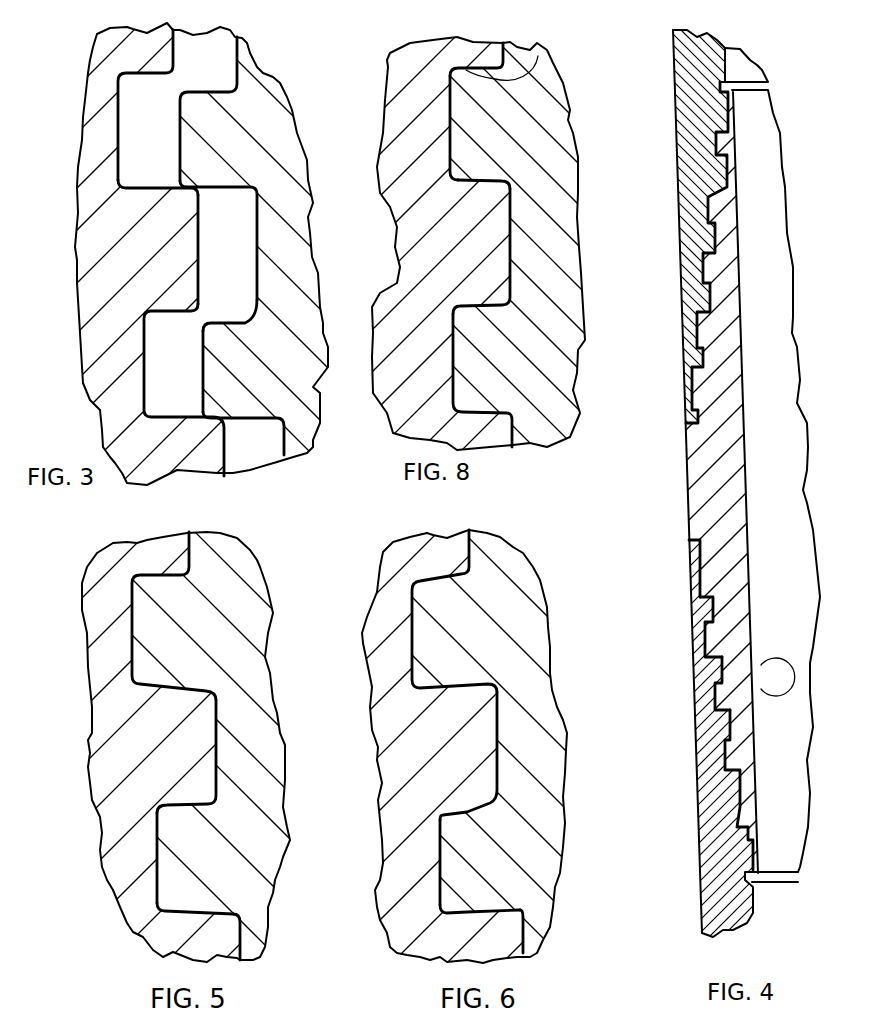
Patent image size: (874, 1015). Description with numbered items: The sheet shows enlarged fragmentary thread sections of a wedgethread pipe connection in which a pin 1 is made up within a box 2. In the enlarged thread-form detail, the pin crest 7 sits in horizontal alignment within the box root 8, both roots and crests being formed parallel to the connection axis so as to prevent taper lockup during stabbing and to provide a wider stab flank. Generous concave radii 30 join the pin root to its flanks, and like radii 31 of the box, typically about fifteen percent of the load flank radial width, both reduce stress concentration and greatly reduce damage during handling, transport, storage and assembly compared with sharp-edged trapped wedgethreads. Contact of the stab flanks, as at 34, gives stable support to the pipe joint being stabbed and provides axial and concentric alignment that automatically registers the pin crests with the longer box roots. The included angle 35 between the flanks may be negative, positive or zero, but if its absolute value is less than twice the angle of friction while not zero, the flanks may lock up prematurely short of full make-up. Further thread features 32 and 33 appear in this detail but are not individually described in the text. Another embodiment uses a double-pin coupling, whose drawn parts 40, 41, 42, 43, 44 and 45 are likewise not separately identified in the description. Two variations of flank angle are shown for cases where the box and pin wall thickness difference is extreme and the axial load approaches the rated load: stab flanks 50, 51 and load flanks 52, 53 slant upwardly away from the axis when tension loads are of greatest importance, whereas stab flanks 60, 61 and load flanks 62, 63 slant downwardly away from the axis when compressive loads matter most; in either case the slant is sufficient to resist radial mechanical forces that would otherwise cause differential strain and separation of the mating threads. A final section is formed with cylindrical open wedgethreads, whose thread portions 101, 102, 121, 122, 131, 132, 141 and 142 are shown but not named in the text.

In FIG. 5, the pin 1 is at (259, 565).
In FIG. 6, the pin 1 is at (503, 535).
In FIG. 5, the box 2 is at (92, 725).
In FIG. 6, the box 2 is at (363, 668).
In FIG. 3, the pin crest 7 is at (178, 133).
In FIG. 3, the box root 8 is at (118, 101).
In FIG. 3, the concave radii 30 is at (255, 320).
In FIG. 3, the box radii 31 is at (146, 416).
In FIG. 3, the upper rounded edge of second panel 32 is at (186, 88).
In FIG. 3, the tongue of first panel 33 is at (198, 305).
In FIG. 3, the stab flank contact 34 is at (182, 183).
In FIG. 3, the included angle 35 is at (240, 189).
In FIG. 4, the board 40 is at (685, 500).
In FIG. 4, the lower panel section 41 is at (697, 750).
In FIG. 4, the upper panel section 42 is at (678, 147).
In FIG. 4, the locking projection 43 is at (761, 689).
In FIG. 4, the bottom edge strip 44 is at (755, 898).
In FIG. 4, the joint between sections 45 is at (723, 541).
In FIG. 5, the stab flank 50 is at (205, 910).
In FIG. 5, the stab flank 51 is at (183, 910).
In FIG. 5, the load flank 52 is at (163, 806).
In FIG. 5, the load flank 53 is at (193, 807).
In FIG. 6, the stab flank 60 is at (483, 922).
In FIG. 6, the stab flank 61 is at (468, 918).
In FIG. 6, the load flank 62 is at (447, 813).
In FIG. 6, the load flank 63 is at (440, 843).
In FIG. 8, the second panel 101 is at (578, 410).
In FIG. 8, the first panel 102 is at (391, 60).
In FIG. 8, the upper tongue of first panel 121 is at (450, 124).
In FIG. 8, the lower tongue of first panel 122 is at (458, 350).
In FIG. 8, the upper groove of second panel 131 is at (454, 106).
In FIG. 8, the lower groove of second panel 132 is at (455, 327).
In FIG. 8, the upper rounded edge 141 is at (538, 56).
In FIG. 8, the locking surface 142 is at (482, 174).